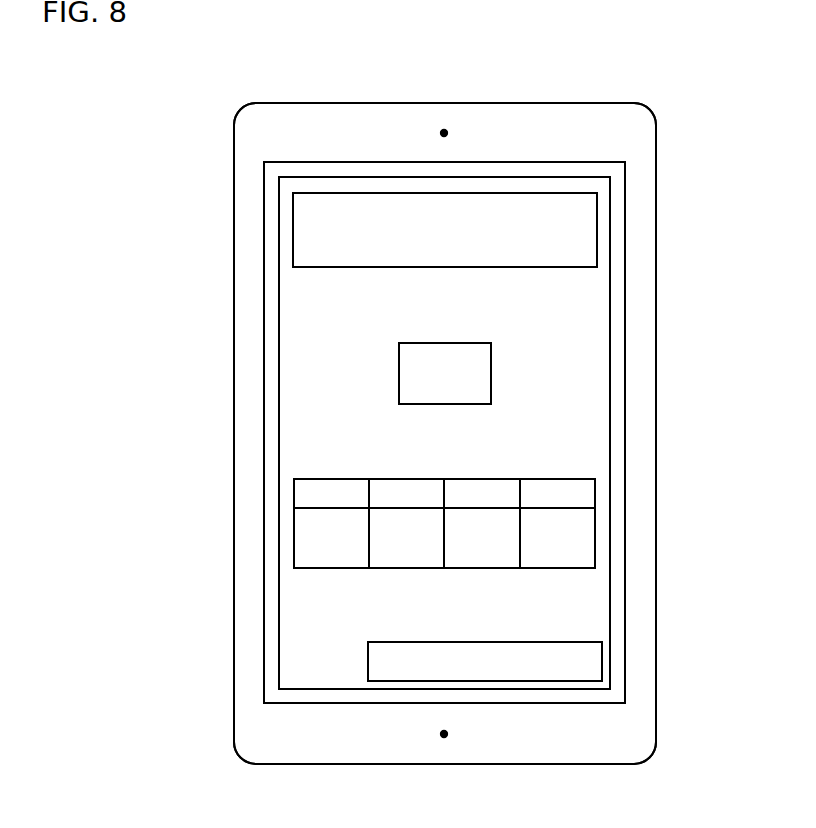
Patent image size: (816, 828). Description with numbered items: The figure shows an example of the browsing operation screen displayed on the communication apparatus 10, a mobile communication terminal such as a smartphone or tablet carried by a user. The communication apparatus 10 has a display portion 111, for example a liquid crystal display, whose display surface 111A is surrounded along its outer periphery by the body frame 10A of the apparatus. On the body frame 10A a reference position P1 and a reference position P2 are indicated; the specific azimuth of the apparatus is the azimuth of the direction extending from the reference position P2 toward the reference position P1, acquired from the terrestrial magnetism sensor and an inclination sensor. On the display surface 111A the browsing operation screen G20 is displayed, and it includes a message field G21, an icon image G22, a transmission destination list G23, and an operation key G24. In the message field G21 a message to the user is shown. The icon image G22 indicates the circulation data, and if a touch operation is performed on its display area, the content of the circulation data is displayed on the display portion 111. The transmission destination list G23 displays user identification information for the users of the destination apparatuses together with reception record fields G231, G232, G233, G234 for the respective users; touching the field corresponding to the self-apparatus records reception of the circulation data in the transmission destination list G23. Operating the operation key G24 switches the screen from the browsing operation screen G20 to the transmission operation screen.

The communication apparatus 10 is at (655, 88).
The body frame 10A is at (656, 207).
The display portion 111 is at (636, 356).
The display surface 111A is at (625, 415).
The reference position P1 is at (442, 133).
The reference position P2 is at (442, 734).
The browsing operation screen G20 is at (279, 311).
The message field G21 is at (293, 216).
The icon image G22 is at (443, 343).
The transmission destination list G23 is at (297, 470).
The reception record field G231 is at (332, 569).
The reception record field G232 is at (407, 569).
The reception record field G233 is at (482, 569).
The reception record field G234 is at (557, 569).
The operation key G24 is at (368, 658).